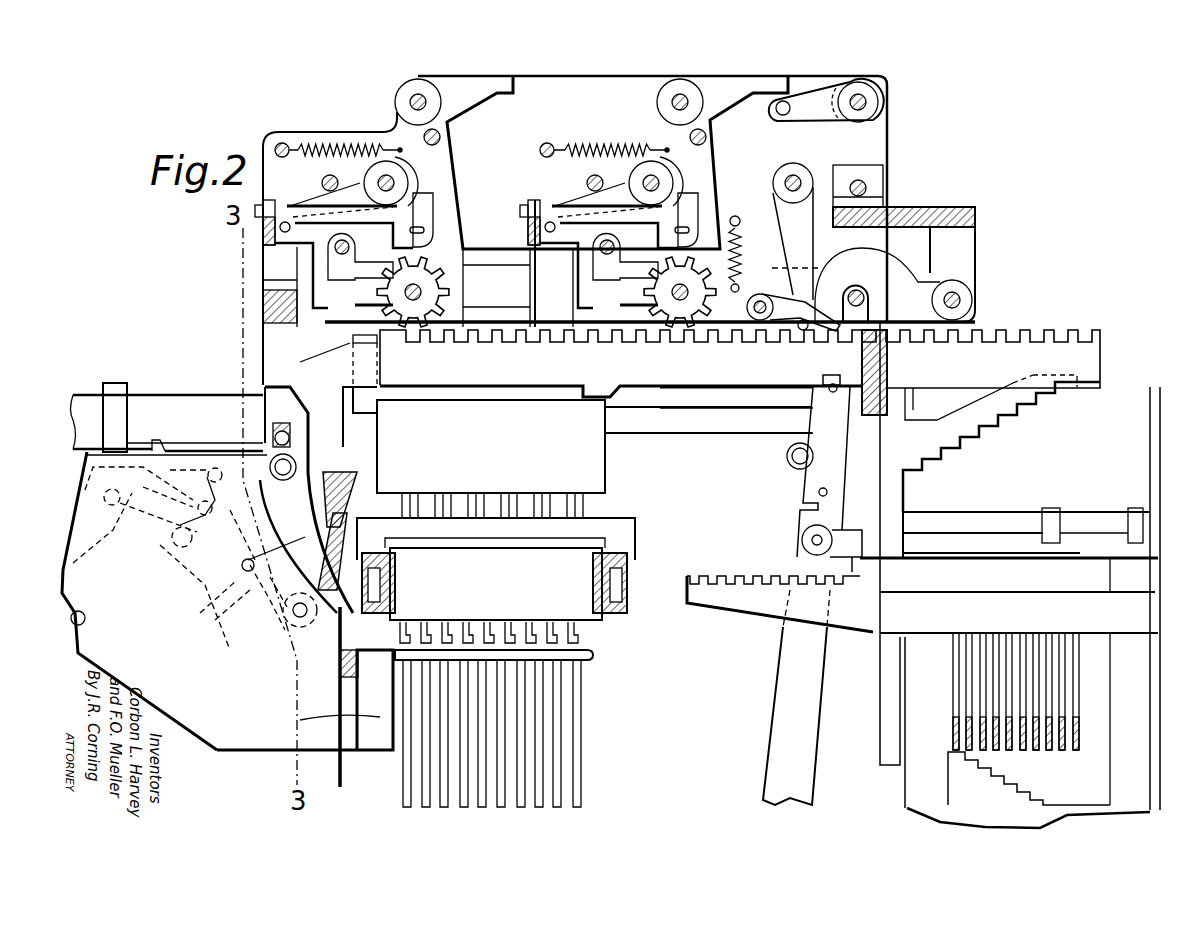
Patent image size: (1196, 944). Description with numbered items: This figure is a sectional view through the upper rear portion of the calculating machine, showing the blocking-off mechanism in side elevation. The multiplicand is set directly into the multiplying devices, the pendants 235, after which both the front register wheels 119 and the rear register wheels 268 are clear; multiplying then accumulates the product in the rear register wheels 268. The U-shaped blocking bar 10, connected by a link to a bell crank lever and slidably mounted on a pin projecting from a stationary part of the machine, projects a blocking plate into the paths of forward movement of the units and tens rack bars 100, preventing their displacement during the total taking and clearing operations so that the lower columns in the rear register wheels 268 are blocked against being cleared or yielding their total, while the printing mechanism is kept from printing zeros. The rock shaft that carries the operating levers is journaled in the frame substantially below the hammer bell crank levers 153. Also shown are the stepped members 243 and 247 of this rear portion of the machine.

The blocking bar 10 is at (287, 407).
The front register wheels 119 is at (413, 343).
The units and tens rack bars 100 is at (517, 372).
The hammer bell crank levers 153 is at (340, 517).
The rear register wheels 268 is at (676, 318).
The stepped member 243 is at (972, 427).
The pendants 235 is at (1078, 548).
The stepped stop 247 is at (1077, 750).